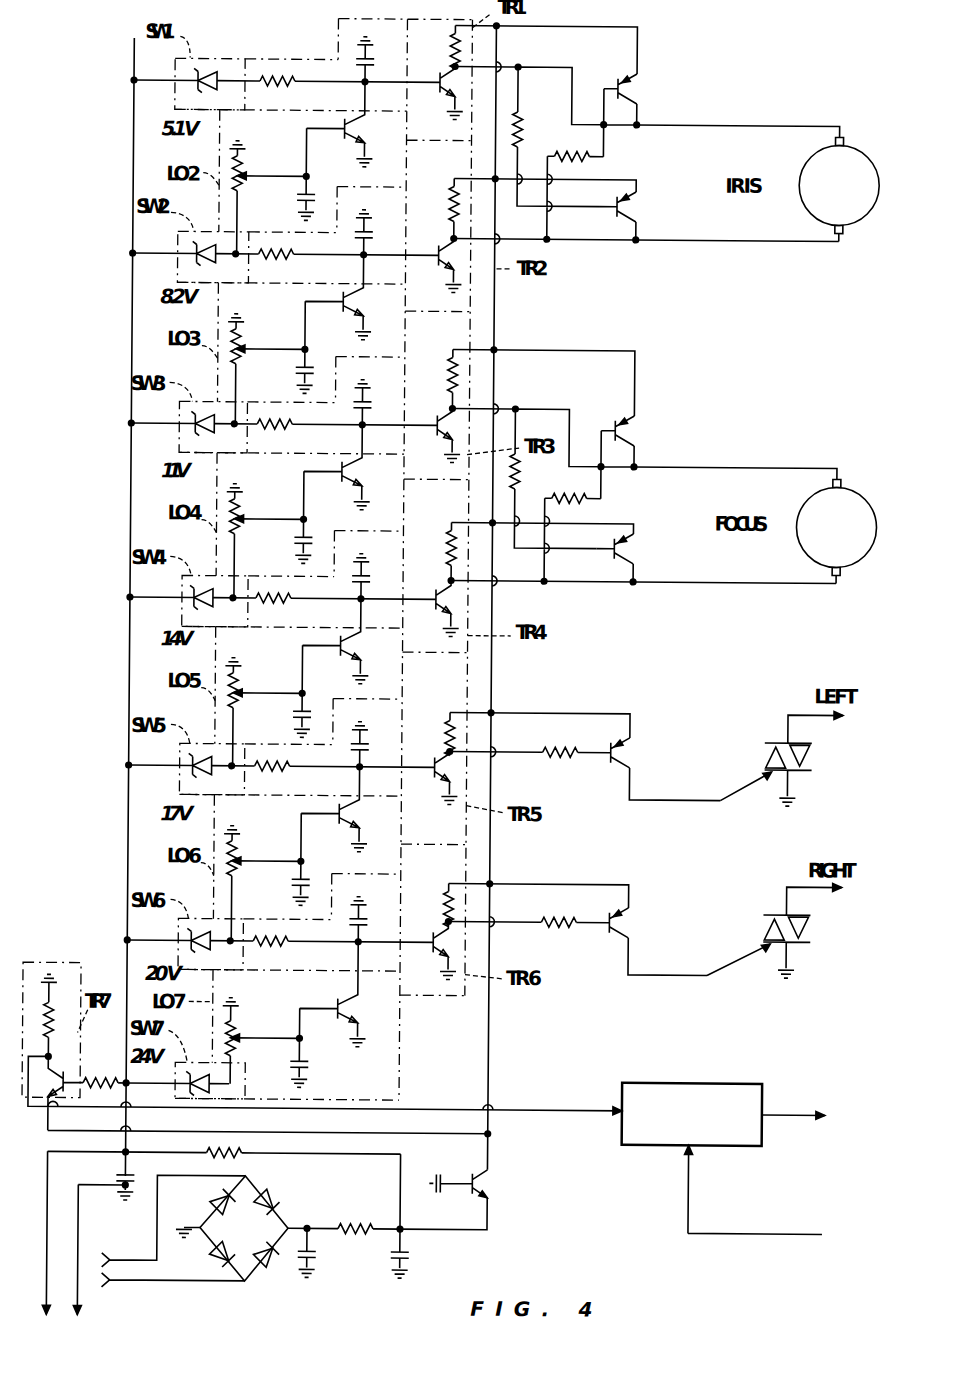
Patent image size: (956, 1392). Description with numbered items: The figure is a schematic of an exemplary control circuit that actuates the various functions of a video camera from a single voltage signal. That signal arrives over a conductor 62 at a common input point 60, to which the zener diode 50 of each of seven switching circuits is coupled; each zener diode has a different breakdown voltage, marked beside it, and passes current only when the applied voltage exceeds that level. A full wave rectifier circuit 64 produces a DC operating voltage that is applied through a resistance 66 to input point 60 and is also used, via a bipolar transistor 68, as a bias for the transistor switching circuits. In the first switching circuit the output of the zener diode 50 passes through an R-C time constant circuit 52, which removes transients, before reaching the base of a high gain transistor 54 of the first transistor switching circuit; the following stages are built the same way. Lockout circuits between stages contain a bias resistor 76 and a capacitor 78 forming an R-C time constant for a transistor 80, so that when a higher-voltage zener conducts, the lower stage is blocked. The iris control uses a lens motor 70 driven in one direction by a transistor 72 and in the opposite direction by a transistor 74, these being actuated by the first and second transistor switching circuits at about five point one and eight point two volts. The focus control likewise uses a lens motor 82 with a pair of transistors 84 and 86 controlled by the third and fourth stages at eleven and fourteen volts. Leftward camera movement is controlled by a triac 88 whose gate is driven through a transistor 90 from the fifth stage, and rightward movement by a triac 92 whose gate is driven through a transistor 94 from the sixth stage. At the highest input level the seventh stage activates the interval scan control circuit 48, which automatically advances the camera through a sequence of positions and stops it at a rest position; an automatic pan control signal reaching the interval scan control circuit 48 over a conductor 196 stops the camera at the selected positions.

The interval scan control circuit 48 is at (714, 1079).
The zener diode 50 is at (215, 70).
The R-C time constant circuit 52 is at (293, 918).
The transistor 54 is at (62, 1080).
The common input point 60 is at (120, 1157).
The conductor 62 is at (54, 1290).
The full wave rectifier circuit 64 is at (286, 1201).
The resistance 66 is at (220, 1153).
The bipolar transistor 68 is at (500, 1184).
The lens motor 70 is at (868, 212).
The transistor 72 is at (642, 214).
The transistor 74 is at (642, 96).
The bias resistor 76 is at (245, 178).
The capacitor 78 is at (308, 190).
The transistor 80 is at (360, 122).
The lens motor 82 is at (868, 554).
The transistor 84 is at (642, 556).
The transistor 86 is at (642, 438).
The triac 88 is at (819, 758).
The transistor 90 is at (640, 758).
The triac 92 is at (819, 929).
The transistor 94 is at (658, 942).
The conductor 196 is at (701, 1191).